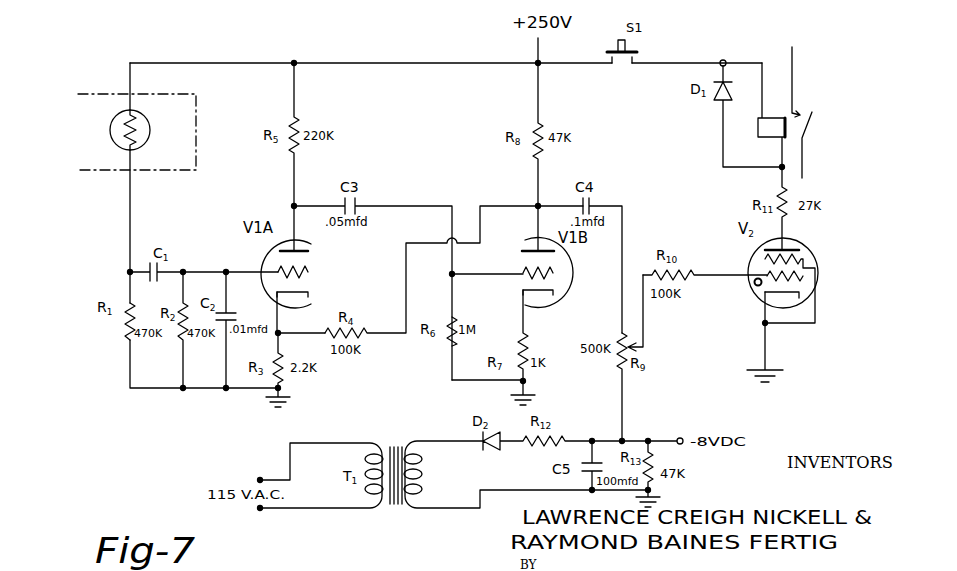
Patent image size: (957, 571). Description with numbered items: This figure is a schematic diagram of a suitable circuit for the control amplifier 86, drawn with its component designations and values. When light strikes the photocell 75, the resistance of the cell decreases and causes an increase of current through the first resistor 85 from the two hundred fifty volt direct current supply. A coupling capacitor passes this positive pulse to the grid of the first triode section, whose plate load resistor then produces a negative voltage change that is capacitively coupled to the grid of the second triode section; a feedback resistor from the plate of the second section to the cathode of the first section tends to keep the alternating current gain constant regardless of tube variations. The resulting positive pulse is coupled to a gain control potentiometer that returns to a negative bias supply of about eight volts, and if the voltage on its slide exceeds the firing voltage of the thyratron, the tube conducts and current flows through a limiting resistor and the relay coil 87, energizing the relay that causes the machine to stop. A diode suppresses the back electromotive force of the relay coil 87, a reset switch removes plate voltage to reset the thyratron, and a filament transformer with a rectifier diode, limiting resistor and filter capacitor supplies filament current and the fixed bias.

The photocell 75 is at (146, 131).
The resistor R1 85 is at (128, 336).
The control amplifier 86 is at (419, 60).
The relay coil 87 is at (755, 144).